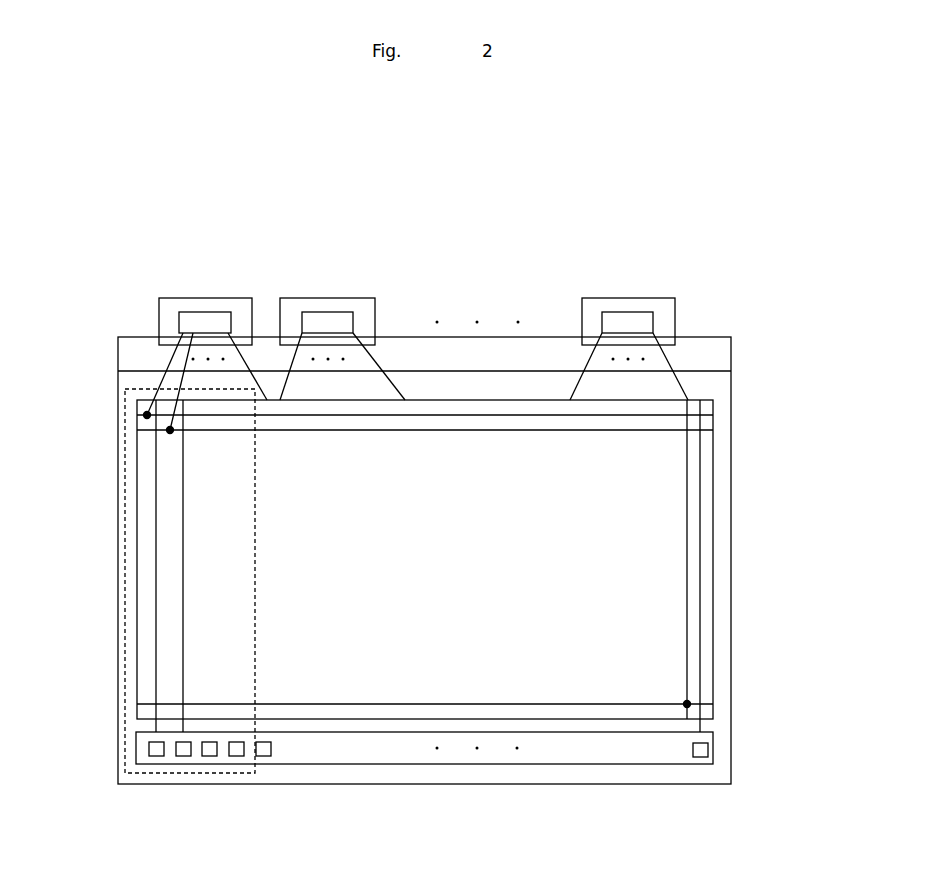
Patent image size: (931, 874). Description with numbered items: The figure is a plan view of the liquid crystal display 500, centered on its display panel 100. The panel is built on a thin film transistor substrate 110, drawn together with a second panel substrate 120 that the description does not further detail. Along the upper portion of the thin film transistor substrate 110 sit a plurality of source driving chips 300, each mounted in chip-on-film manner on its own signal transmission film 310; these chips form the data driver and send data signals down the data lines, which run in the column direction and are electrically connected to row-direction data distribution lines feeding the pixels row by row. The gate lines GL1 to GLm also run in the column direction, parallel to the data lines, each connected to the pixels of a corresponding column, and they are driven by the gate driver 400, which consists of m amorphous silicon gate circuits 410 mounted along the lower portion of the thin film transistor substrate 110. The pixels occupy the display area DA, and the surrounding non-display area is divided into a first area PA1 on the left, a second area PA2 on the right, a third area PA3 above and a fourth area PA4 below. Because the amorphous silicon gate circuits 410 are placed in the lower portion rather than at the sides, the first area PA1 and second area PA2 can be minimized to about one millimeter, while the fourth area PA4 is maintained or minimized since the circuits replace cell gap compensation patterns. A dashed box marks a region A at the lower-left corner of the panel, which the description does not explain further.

The liquid crystal display 500 is at (129, 205).
The display panel 100 is at (806, 347).
The thin film transistor substrate 110 is at (722, 355).
The second substrate 120 is at (722, 392).
The signal transmission film 310 is at (190, 297).
The source driving chip 300 is at (210, 312).
The gate driver 400 is at (709, 749).
The amorphous silicon gate circuit 410 is at (155, 758).
The enlarged region A is at (196, 773).
The display area DA is at (653, 586).
The first area PA1 is at (125, 527).
The second area PA2 is at (720, 521).
The third area PA3 is at (448, 355).
The fourth area PA4 is at (478, 773).
The first gate line GL1 is at (155, 490).
The m-th gate line GLm is at (702, 477).